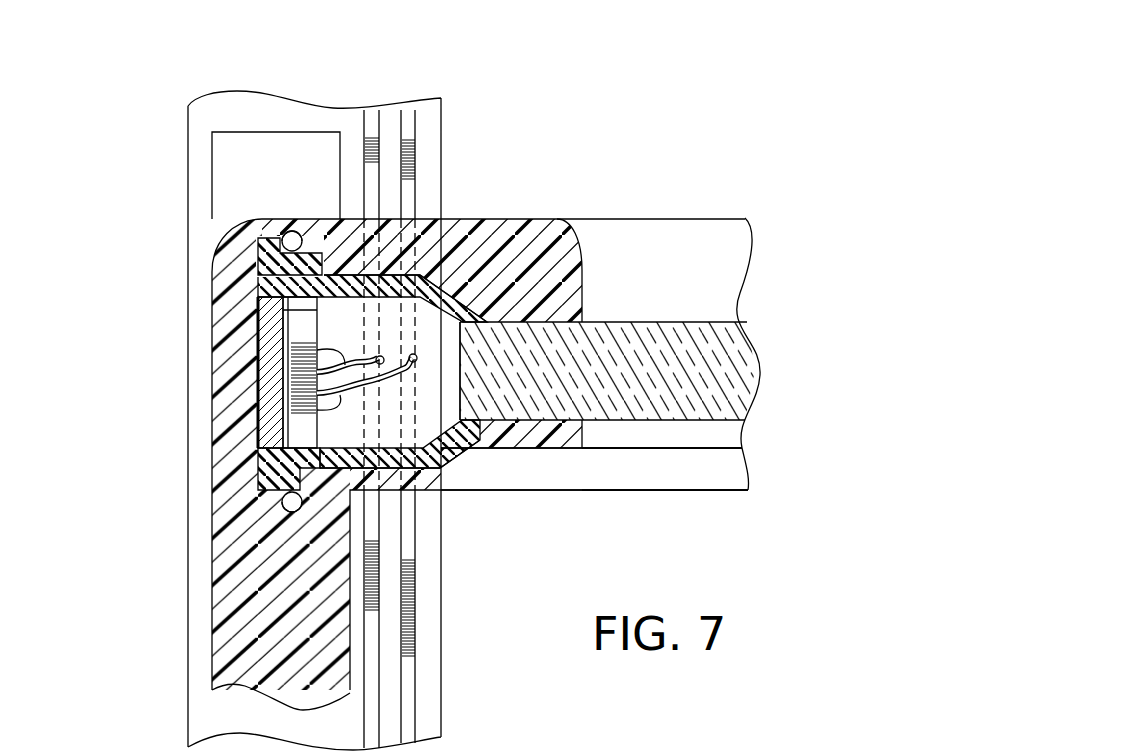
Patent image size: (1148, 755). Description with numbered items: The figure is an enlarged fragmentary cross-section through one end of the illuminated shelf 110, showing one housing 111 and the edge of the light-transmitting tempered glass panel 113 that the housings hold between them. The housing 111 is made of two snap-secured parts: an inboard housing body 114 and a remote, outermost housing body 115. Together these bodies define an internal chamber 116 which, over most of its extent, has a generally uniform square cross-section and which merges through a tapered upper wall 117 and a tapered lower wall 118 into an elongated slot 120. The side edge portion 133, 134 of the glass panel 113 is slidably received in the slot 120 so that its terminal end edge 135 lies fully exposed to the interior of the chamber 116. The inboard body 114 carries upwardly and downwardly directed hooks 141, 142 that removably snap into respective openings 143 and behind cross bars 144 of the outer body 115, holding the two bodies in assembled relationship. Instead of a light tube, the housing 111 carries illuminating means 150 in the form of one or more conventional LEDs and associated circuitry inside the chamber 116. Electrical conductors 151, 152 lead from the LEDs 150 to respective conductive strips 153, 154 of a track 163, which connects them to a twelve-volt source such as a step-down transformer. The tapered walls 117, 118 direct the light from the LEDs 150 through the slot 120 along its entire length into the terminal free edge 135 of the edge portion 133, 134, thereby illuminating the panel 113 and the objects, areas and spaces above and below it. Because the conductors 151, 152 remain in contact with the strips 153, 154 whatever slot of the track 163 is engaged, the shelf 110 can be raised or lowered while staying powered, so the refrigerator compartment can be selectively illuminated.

The shelf 110 is at (742, 170).
The housing 111 is at (430, 268).
The glass panel 113 is at (692, 320).
The inboard housing body 114 is at (446, 488).
The remote housing body 115 is at (262, 440).
The internal chamber 116 is at (343, 310).
The upper wall 117 is at (456, 282).
The lower wall 118 is at (478, 455).
The slot 120 is at (582, 246).
The side edge portion 133 is at (551, 402).
The side edge portion 134 is at (665, 469).
The terminal end edge 135 is at (458, 388).
The upwardly directed hook 141 is at (268, 238).
The downwardly directed hook 142 is at (262, 480).
The opening 143 is at (293, 233).
The cross bar 144 is at (282, 230).
The illuminating means 150 is at (292, 312).
The electrical conductor 151 is at (300, 350).
The electrical conductor 152 is at (300, 413).
The conductive strip 153 is at (370, 118).
The conductive strip 154 is at (407, 118).
The track 163 is at (188, 140).